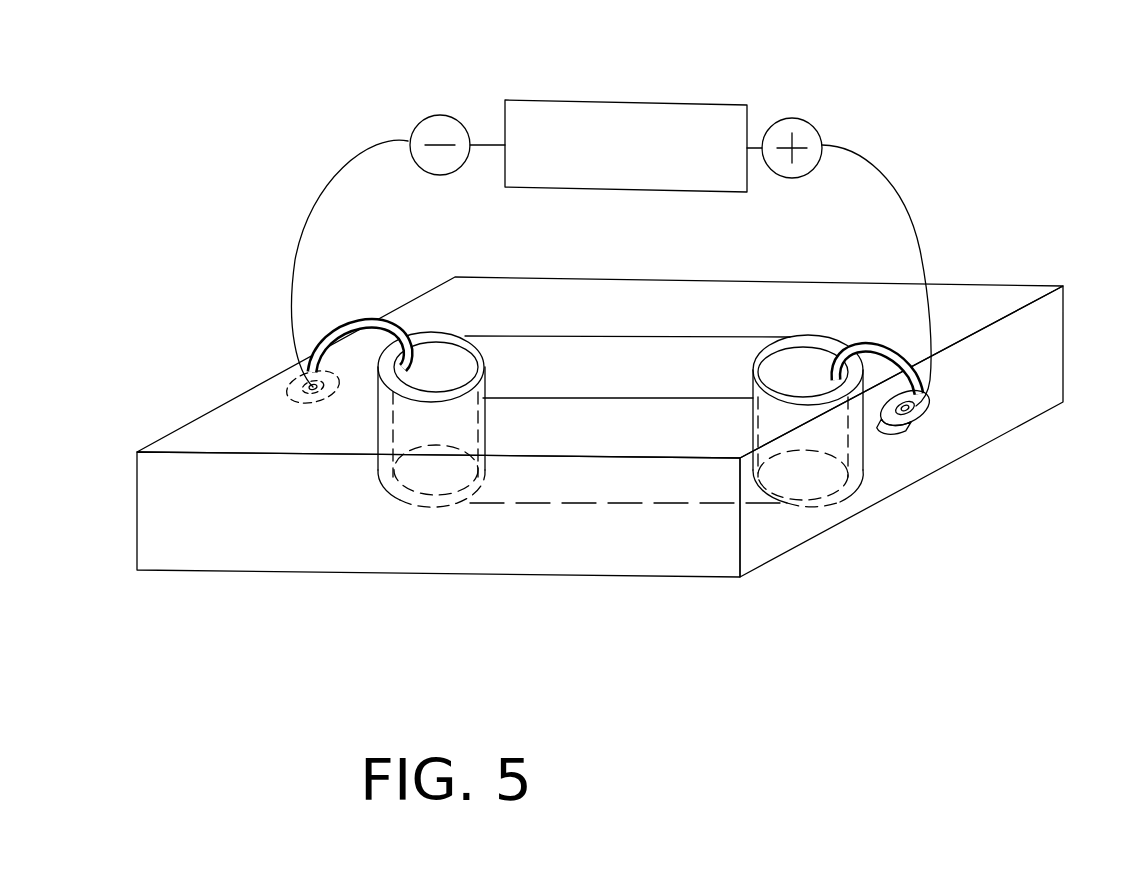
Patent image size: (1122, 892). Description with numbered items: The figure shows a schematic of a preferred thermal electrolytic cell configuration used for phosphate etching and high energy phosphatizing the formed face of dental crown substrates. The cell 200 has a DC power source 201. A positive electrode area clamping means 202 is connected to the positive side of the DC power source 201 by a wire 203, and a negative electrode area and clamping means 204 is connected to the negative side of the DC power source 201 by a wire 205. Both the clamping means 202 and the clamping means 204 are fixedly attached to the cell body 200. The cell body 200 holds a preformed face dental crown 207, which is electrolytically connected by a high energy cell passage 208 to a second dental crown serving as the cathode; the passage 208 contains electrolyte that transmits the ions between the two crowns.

The cell 200 is at (600, 427).
The DC power source 201 is at (557, 98).
The positive electrode area clamping means 202 is at (920, 420).
The wire 203 is at (882, 172).
The negative electrode area and clamping means 204 is at (307, 383).
The wire 205 is at (340, 173).
The preformed face dental crown 207 is at (750, 380).
The high energy cell passage 208 is at (593, 372).